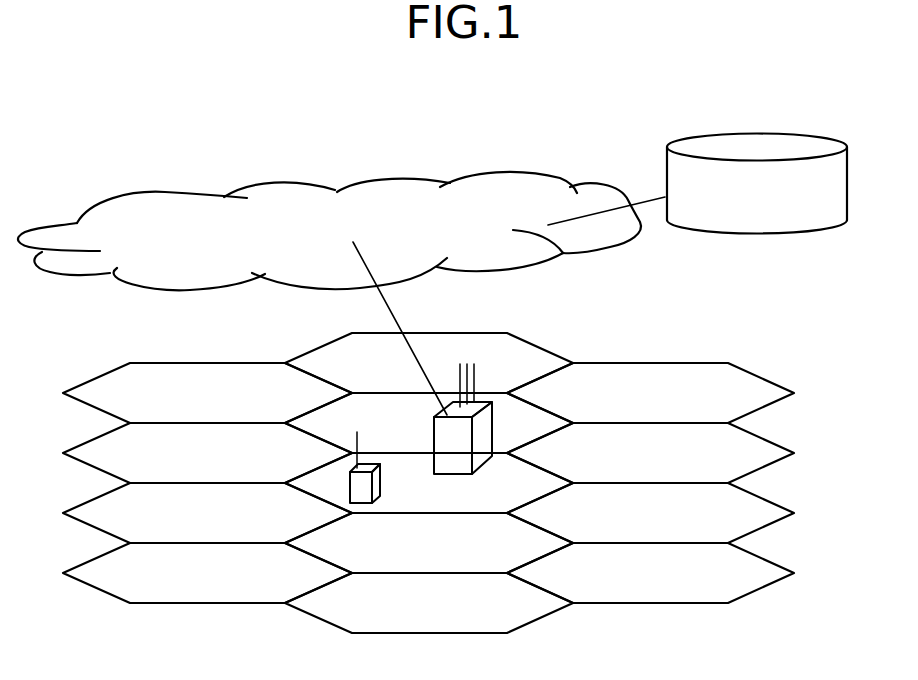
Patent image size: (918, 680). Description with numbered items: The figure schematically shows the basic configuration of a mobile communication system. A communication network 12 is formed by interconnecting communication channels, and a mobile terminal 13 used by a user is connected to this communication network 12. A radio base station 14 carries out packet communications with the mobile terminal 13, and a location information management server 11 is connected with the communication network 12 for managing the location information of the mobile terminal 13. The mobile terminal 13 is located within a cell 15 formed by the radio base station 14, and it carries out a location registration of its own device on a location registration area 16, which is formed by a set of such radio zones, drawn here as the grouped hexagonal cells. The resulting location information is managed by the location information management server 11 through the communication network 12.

The location information management server 11 is at (747, 132).
The communication network 12 is at (287, 198).
The mobile terminal 13 is at (347, 482).
The radio base station 14 is at (431, 437).
The cell 15 is at (405, 493).
The location registration area 16 is at (473, 479).